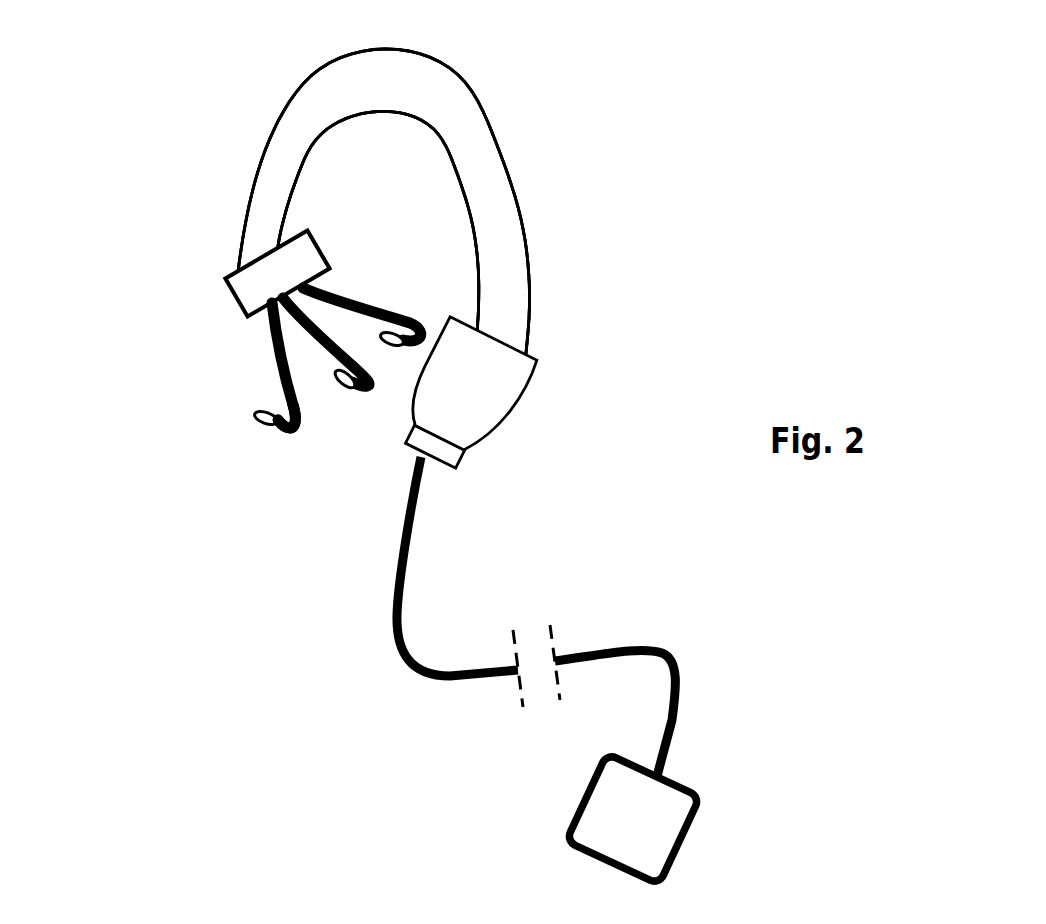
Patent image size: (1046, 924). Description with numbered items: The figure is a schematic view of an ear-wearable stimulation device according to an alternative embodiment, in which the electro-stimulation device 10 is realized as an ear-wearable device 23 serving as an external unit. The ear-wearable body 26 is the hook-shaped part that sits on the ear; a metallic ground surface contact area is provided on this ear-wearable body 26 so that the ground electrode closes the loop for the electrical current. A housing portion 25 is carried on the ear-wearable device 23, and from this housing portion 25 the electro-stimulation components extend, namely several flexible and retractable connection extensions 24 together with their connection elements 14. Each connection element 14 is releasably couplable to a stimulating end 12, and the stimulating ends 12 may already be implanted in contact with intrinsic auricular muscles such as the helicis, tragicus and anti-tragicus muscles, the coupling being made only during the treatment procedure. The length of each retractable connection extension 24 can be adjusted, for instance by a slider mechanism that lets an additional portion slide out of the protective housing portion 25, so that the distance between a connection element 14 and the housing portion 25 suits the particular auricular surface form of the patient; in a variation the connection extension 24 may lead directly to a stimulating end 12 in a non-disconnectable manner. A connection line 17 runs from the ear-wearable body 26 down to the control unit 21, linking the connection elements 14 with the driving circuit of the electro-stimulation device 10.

The electro-stimulation device 10 is at (610, 125).
The ear-wearable device 23 is at (384, 201).
The ear-wearable body 26 is at (538, 268).
The housing portion 25 is at (217, 289).
The retractable connection extension 24 is at (262, 358).
The stimulation end 12 is at (252, 442).
The connection element 14 is at (288, 448).
The connection line 17 is at (424, 552).
The control unit 21 is at (718, 792).